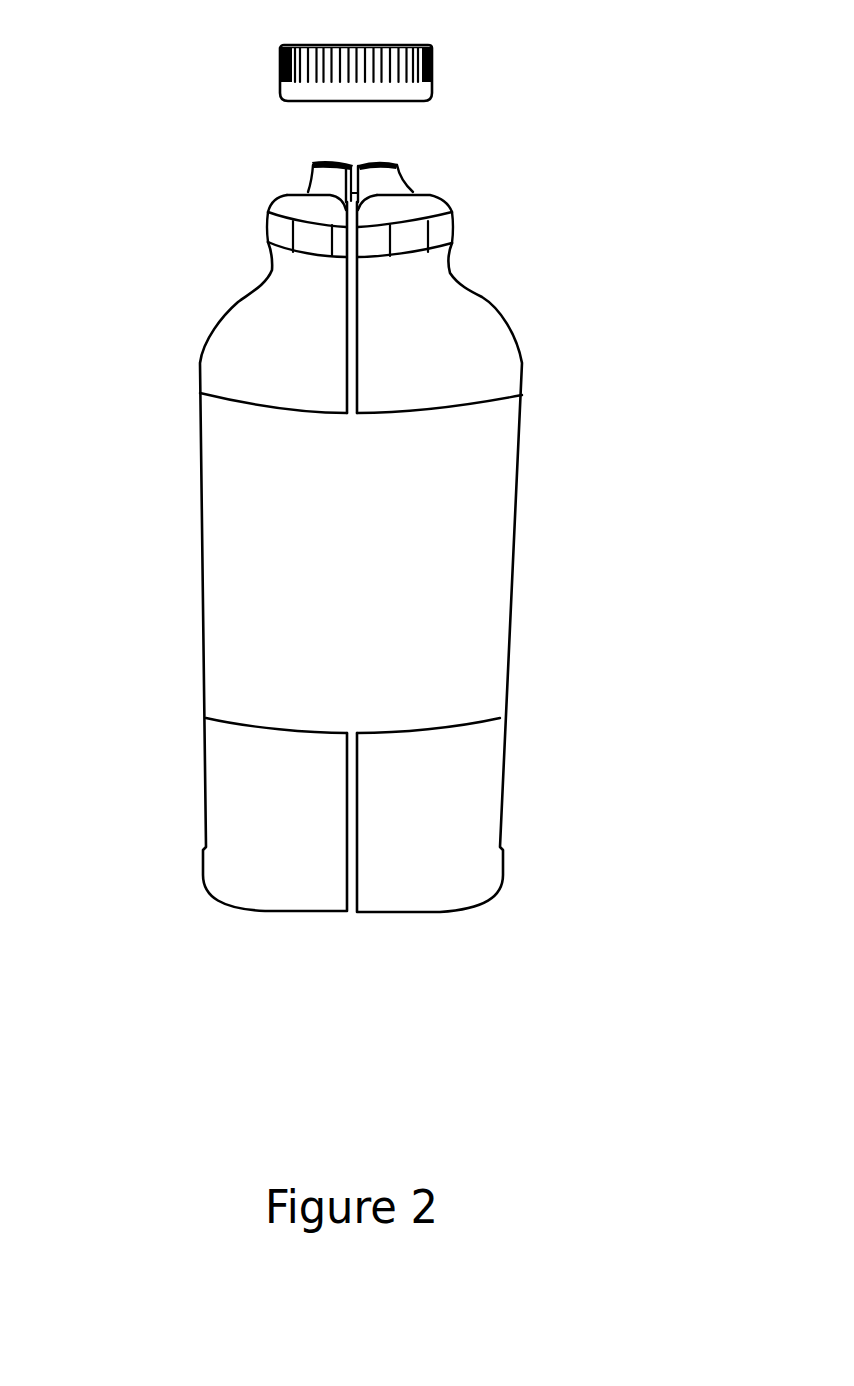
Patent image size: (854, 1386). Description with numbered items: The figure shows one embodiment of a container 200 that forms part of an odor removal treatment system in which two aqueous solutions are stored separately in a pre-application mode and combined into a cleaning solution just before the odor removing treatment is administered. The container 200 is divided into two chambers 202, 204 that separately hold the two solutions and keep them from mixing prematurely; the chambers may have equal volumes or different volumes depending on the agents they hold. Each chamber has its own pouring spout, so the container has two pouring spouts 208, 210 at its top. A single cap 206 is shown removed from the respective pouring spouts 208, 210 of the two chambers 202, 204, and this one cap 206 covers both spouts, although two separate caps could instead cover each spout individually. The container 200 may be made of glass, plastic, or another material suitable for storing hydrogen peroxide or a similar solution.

The container 200 is at (113, 62).
The chamber 202 is at (245, 347).
The chamber 204 is at (448, 322).
The cap 206 is at (423, 91).
The pouring spout 208 is at (386, 162).
The pouring spout 210 is at (328, 162).